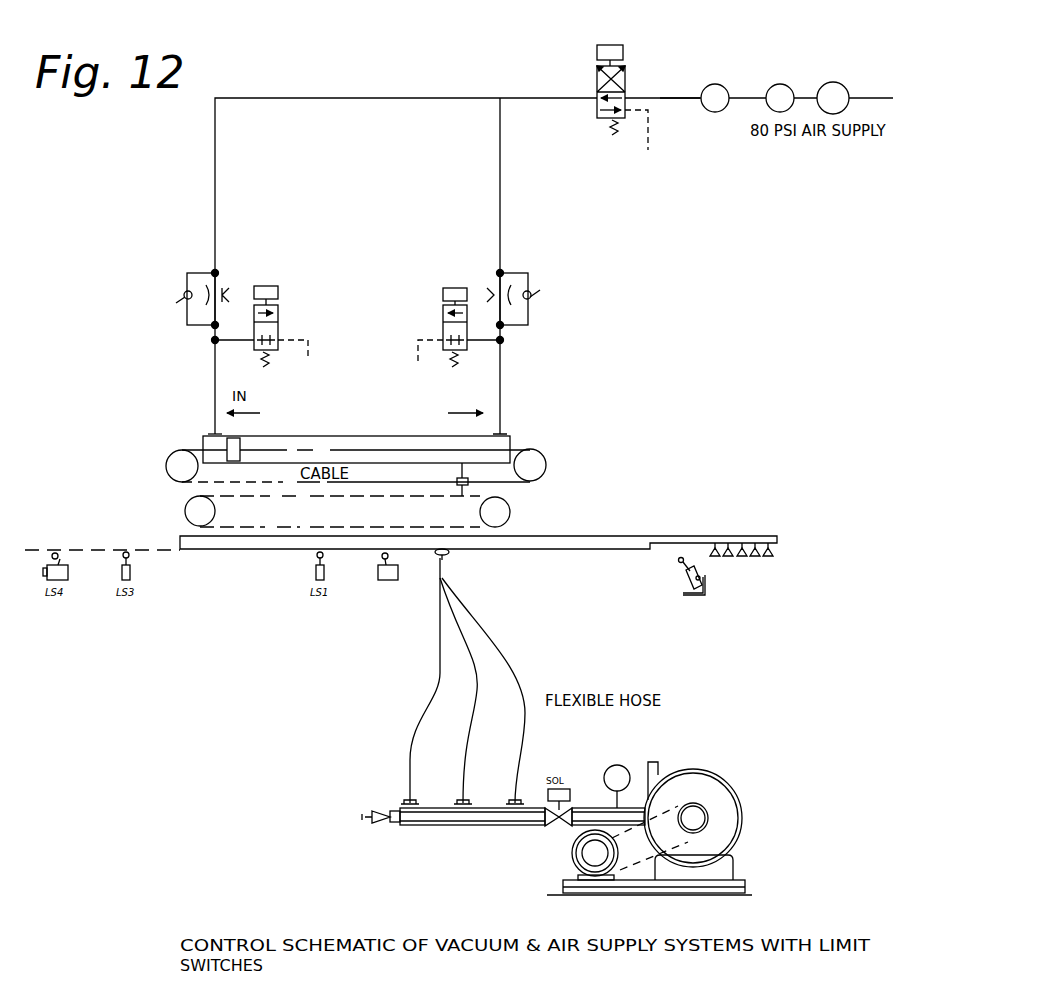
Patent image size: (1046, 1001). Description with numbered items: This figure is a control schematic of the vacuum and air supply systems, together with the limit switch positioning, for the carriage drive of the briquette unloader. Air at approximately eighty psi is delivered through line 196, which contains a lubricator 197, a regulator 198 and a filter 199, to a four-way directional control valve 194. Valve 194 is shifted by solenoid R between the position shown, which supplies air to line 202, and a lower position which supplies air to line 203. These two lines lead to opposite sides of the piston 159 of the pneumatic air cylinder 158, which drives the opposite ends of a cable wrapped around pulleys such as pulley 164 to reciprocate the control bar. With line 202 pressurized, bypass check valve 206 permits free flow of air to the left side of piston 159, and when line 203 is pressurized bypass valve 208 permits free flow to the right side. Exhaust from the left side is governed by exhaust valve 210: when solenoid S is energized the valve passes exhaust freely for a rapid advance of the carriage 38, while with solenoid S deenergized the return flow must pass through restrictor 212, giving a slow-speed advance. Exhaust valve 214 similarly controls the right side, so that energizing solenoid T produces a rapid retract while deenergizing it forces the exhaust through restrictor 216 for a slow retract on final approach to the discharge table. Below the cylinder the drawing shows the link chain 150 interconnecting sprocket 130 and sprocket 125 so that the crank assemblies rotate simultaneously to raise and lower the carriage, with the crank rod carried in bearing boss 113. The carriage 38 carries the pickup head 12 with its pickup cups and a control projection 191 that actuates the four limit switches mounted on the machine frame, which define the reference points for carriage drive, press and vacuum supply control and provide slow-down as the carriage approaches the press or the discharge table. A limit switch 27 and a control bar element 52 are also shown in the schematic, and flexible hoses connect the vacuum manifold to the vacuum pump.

The pickup head 12 is at (722, 535).
The limit switch 27 is at (694, 599).
The carriage 38 is at (277, 551).
The control bar 52 is at (468, 478).
The bearing boss 113 is at (167, 466).
The chain sprocket 125 is at (503, 524).
The sprocket 130 is at (185, 511).
The link chain 150 is at (240, 527).
The pneumatic air cylinder 158 is at (285, 436).
The piston 159 is at (268, 428).
The pulley 164 is at (546, 465).
The control projection 191 is at (388, 558).
The four-way directional control valve 194 is at (602, 118).
The supply line 196 is at (684, 100).
The lubricator 197 is at (715, 112).
The regulator 198 is at (778, 84).
The filter 199 is at (837, 83).
The air line 202 is at (416, 98).
The air line 203 is at (500, 168).
The bypass check valve 206 is at (185, 299).
The bypass valve 208 is at (530, 296).
The exhaust valve 210 is at (282, 330).
The restrictor 212 is at (226, 286).
The exhaust valve 214 is at (442, 319).
The restrictor 216 is at (492, 286).
The solenoid R is at (600, 45).
The solenoid S is at (279, 289).
The solenoid T is at (443, 292).